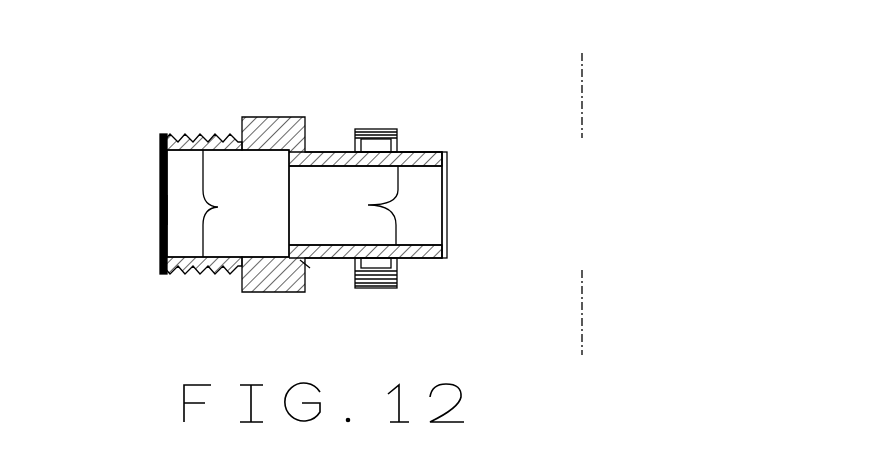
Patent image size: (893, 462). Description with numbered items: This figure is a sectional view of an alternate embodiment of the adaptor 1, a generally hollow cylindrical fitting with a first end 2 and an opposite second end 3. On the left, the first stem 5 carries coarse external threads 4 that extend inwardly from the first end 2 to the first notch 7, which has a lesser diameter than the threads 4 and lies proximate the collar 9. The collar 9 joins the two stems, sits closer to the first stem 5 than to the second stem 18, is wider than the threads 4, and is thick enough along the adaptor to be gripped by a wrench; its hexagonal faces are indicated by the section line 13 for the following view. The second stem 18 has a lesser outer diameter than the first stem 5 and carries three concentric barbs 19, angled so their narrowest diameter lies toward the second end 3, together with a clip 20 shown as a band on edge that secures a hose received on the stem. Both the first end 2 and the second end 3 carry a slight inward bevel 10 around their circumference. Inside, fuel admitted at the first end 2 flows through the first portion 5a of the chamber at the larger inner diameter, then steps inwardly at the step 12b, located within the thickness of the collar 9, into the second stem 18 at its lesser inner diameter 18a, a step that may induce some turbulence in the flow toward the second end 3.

The adaptor 1 is at (150, 95).
The first end 2 is at (160, 178).
The second end 3 is at (448, 197).
The threads 4 is at (197, 138).
The first stem 5 is at (160, 211).
The first portion of the chamber 5a is at (230, 203).
The first notch 7 is at (227, 140).
The collar 9 is at (262, 118).
The inward bevel 10 is at (160, 253).
The step 12b is at (307, 263).
The section line 13 is at (582, 53).
The second stem 18 is at (322, 150).
The inner diameter of the second stem 18a is at (360, 205).
The barbs 19 is at (435, 150).
The clip 20 is at (378, 128).